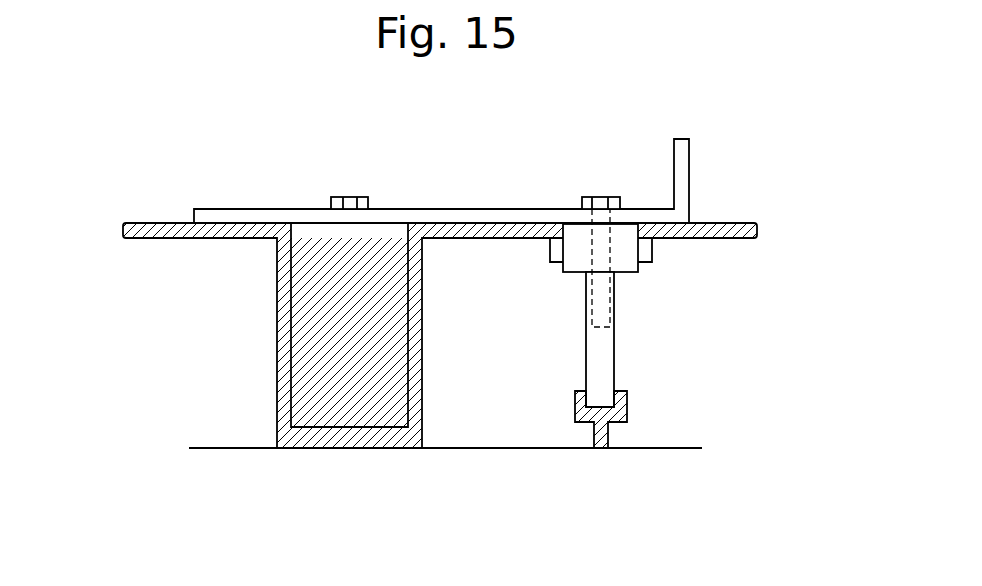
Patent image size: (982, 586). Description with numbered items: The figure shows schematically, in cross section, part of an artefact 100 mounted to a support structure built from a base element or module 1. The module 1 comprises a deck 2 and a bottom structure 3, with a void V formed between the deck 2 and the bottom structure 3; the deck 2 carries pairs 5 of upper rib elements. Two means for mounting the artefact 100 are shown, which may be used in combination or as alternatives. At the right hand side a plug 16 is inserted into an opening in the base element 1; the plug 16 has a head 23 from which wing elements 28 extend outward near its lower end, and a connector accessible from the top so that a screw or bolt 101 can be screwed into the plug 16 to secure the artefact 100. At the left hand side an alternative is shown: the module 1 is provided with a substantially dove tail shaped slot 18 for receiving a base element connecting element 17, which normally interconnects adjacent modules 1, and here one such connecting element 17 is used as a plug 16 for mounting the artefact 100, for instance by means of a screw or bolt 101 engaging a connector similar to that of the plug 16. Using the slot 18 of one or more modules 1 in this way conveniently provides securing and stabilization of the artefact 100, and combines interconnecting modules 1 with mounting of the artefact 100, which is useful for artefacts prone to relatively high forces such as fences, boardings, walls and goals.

The base element or module 1 is at (148, 457).
The deck 2 is at (150, 222).
The bottom structure 3 is at (233, 453).
The pair of upper rib elements 5 is at (332, 178).
The plug 16 is at (620, 359).
The base element connecting element 17 is at (334, 335).
The slot 18 is at (294, 370).
The head 23 is at (578, 258).
The wing element 28 is at (645, 249).
The artefact 100 is at (492, 218).
The screw or bolt 101 is at (350, 198).
The void V is at (222, 340).